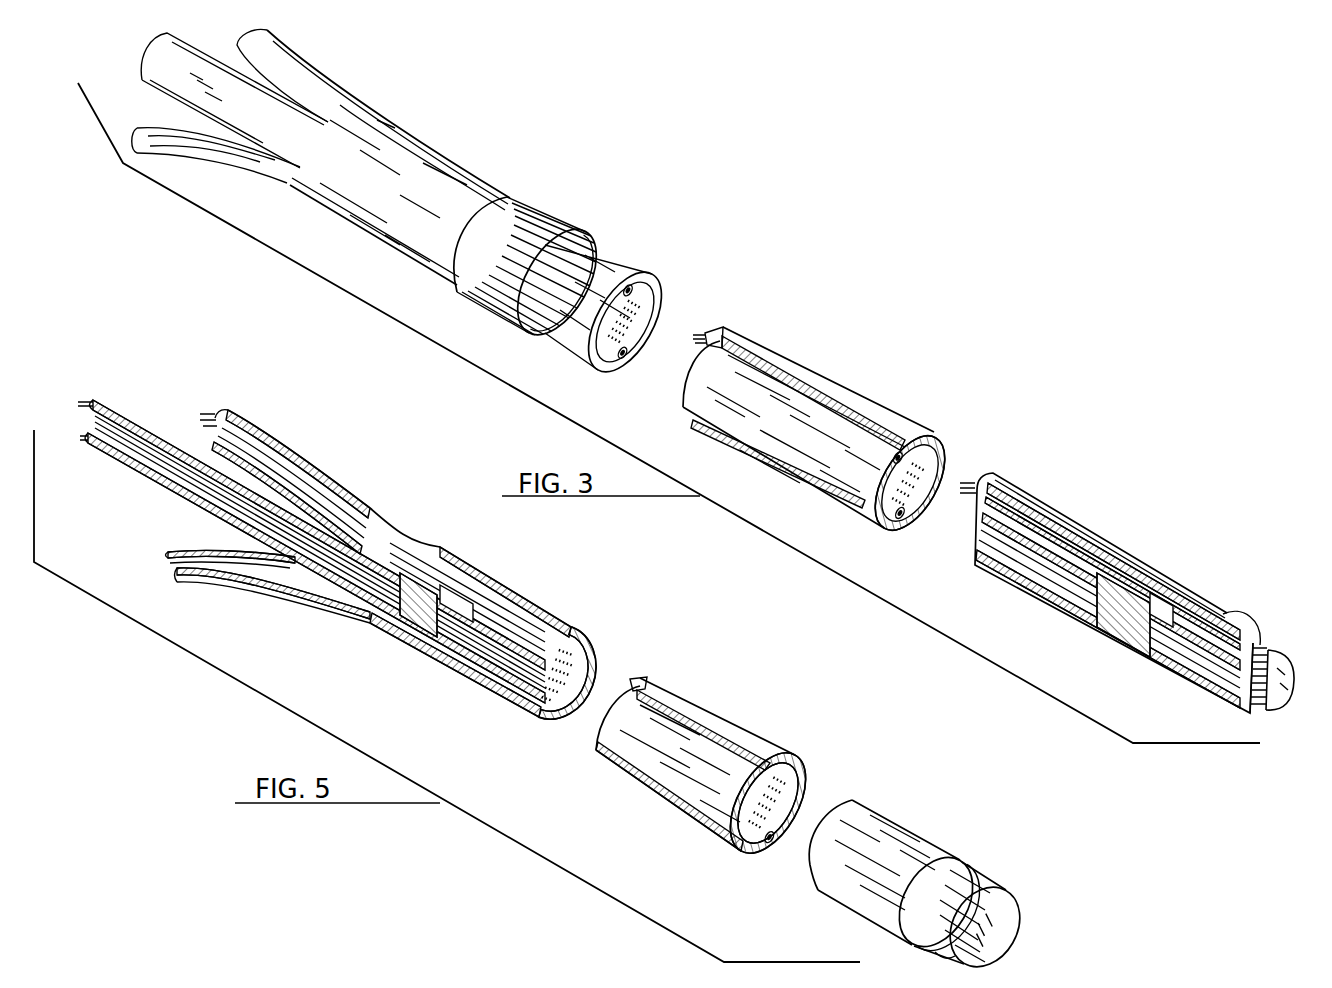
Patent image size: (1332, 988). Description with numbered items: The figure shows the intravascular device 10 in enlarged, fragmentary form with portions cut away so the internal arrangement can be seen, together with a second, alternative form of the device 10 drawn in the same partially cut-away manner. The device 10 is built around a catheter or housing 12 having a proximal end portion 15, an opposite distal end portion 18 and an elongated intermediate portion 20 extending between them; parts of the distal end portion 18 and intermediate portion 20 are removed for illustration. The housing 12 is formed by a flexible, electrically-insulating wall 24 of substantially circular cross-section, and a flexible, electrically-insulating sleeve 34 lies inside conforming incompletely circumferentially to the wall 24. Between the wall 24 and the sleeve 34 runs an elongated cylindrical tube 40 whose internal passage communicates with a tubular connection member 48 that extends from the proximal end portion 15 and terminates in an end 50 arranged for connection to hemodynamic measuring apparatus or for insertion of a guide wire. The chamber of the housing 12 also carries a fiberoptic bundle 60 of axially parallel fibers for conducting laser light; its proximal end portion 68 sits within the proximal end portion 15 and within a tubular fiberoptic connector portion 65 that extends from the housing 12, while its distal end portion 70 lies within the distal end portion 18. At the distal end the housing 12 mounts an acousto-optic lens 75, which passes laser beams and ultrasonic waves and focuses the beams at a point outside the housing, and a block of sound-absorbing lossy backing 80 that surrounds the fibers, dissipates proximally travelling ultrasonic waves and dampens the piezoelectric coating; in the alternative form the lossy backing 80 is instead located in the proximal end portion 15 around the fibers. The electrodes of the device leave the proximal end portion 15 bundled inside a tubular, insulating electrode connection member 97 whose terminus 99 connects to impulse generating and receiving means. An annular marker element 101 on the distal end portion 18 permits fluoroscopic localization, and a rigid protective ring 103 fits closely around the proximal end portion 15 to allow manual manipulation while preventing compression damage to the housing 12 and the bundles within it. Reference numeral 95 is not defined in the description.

In FIG. 3, the device 10 is at (940, 412).
In FIG. 5, the device 10 is at (785, 712).
In FIG. 3, the housing 12 is at (765, 345).
In FIG. 5, the housing 12 is at (680, 696).
In FIG. 3, the proximal end portion 15 is at (447, 165).
In FIG. 5, the proximal end portion 15 is at (441, 550).
In FIG. 3, the distal end portion 18 is at (1068, 510).
In FIG. 5, the distal end portion 18 is at (896, 828).
In FIG. 3, the intermediate portion 20 is at (835, 380).
In FIG. 3, the wall 24 is at (895, 528).
In FIG. 5, the wall 24 is at (648, 681).
In FIG. 5, the sleeve 34 is at (740, 775).
In FIG. 3, the tube 40 is at (622, 368).
In FIG. 3, the tubular connection member 48 is at (217, 152).
In FIG. 5, the tubular connection member 48 is at (250, 578).
In FIG. 3, the end 50 is at (134, 131).
In FIG. 5, the end 50 is at (168, 553).
In FIG. 3, the fiberoptic bundle 60 is at (925, 452).
In FIG. 5, the fiberoptic bundle 60 is at (596, 645).
In FIG. 3, the fiberoptic connector portion 65 is at (170, 47).
In FIG. 5, the fiberoptic connector portion 65 is at (110, 408).
In FIG. 3, the proximal end portion of the fiberoptic bundle 68 is at (660, 305).
In FIG. 5, the proximal end portion of the fiberoptic bundle 68 is at (505, 612).
In FIG. 3, the distal end portion of the fiberoptic bundle 70 is at (1180, 595).
In FIG. 3, the acousto-optic lens 75 is at (1282, 690).
In FIG. 5, the acousto-optic lens 75 is at (1010, 918).
In FIG. 3, the lossy backing 80 is at (1100, 640).
In FIG. 5, the lossy backing 80 is at (400, 617).
In FIG. 3, the conductor 95 is at (632, 268).
In FIG. 3, the electrode connection member 97 is at (298, 77).
In FIG. 5, the electrode connection member 97 is at (256, 438).
In FIG. 3, the terminus 99 is at (265, 40).
In FIG. 5, the terminus 99 is at (219, 406).
In FIG. 5, the annular marker element 101 is at (956, 856).
In FIG. 3, the protective ring 103 is at (545, 210).